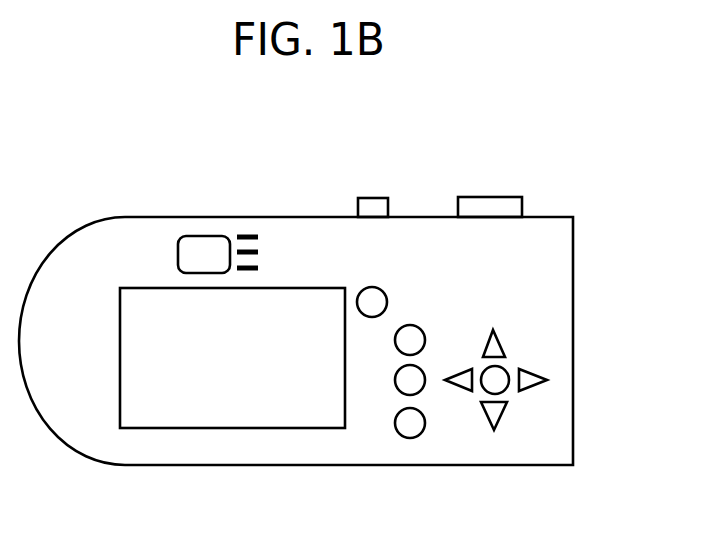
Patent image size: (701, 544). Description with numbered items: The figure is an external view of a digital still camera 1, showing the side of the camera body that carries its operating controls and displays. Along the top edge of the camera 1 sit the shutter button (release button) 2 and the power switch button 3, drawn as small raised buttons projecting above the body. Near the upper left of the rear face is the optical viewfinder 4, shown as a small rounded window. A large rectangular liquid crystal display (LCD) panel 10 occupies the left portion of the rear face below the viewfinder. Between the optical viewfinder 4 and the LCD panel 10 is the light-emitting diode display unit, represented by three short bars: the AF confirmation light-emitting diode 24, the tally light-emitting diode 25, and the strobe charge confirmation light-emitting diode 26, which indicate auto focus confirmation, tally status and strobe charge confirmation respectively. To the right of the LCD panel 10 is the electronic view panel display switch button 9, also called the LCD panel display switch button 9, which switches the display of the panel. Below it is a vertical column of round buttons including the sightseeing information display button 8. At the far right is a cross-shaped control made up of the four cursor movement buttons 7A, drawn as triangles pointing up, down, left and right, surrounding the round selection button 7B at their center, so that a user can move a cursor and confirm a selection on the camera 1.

The digital still camera 1 is at (504, 465).
The shutter button 2 is at (490, 197).
The power switch button 3 is at (373, 198).
The optical viewfinder 4 is at (205, 236).
The cursor movement buttons 7A is at (517, 357).
The selection button 7B is at (505, 390).
The sightseeing information display button 8 is at (410, 438).
The electronic view panel display switch button 9 is at (387, 302).
The liquid crystal display panel 10 is at (233, 428).
The AF confirmation light-emitting diode 24 is at (248, 236).
The tally light-emitting diode 25 is at (258, 252).
The strobe charge confirmation light-emitting diode 26 is at (258, 268).